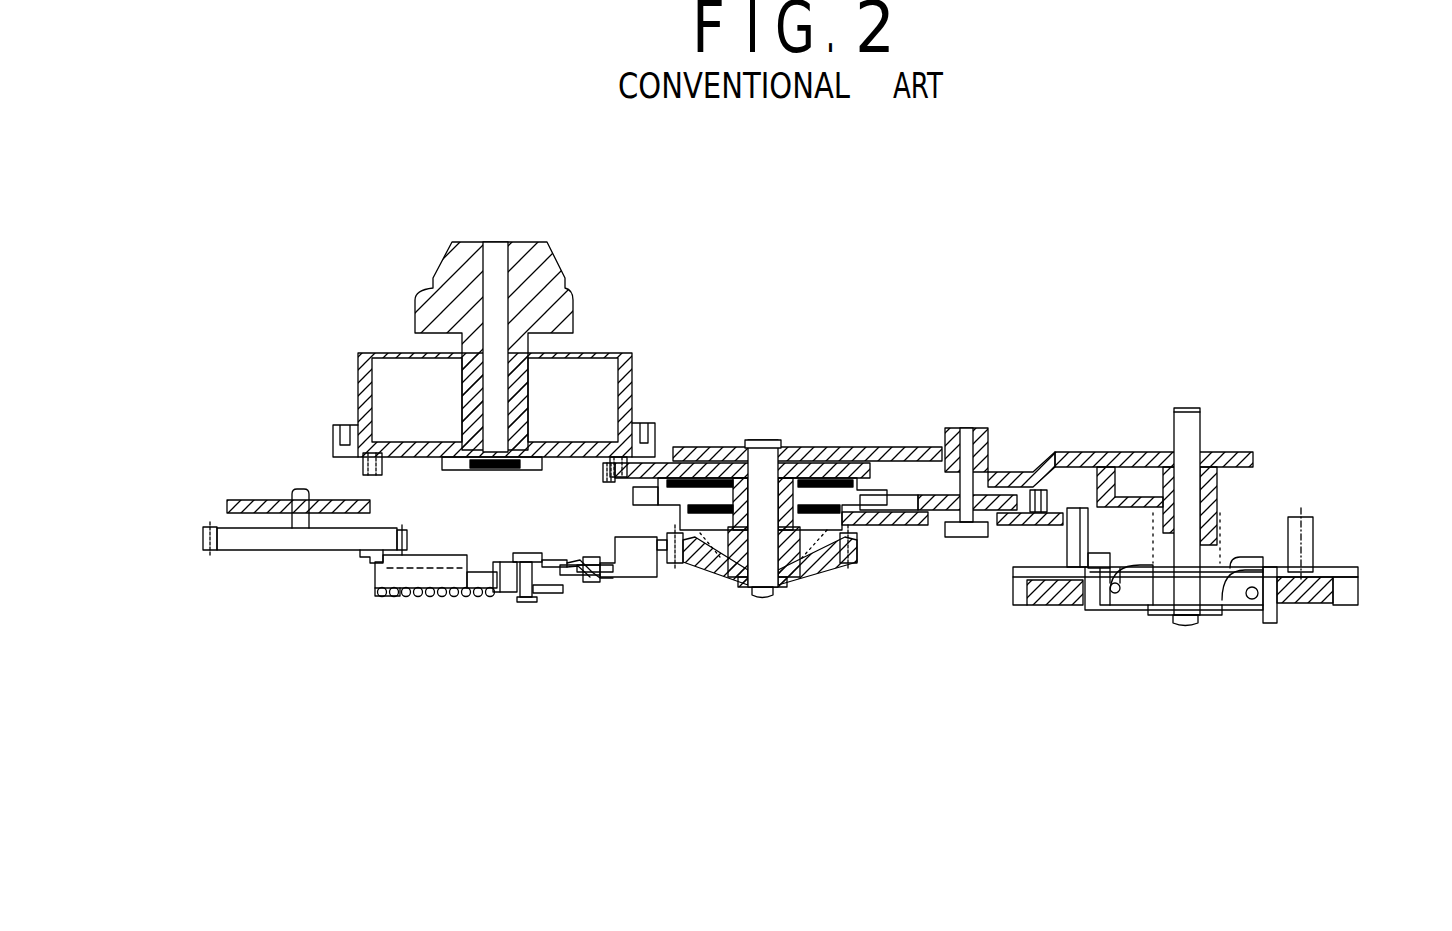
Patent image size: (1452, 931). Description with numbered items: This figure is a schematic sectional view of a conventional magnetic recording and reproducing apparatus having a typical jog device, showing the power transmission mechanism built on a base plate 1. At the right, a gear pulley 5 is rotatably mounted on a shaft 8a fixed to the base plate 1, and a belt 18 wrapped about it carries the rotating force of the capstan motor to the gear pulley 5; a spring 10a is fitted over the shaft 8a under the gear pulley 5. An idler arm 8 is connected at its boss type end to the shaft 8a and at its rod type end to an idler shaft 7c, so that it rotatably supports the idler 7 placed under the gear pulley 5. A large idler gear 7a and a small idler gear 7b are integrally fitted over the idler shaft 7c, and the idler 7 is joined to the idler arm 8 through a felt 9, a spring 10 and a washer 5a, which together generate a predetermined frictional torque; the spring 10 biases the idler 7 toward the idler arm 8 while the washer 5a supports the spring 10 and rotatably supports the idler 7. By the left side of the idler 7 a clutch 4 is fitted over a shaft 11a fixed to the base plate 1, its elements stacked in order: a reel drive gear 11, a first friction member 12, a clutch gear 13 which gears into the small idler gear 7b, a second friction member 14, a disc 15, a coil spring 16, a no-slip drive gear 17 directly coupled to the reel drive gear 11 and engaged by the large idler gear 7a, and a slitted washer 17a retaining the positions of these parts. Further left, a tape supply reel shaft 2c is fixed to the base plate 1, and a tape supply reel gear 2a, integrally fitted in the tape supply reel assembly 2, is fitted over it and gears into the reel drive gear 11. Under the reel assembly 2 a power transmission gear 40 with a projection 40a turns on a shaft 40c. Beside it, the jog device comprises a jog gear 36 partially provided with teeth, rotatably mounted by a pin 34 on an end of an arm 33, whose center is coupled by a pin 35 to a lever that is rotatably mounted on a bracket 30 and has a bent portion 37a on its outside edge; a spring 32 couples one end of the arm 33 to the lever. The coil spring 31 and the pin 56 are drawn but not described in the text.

The base plate 1 is at (1240, 455).
The tape supply reel assembly 2 is at (564, 268).
The tape supply reel gear 2a is at (363, 468).
The tape supply reel shaft 2c is at (496, 258).
The clutch 4 is at (767, 609).
The gear pulley 5 is at (1105, 623).
The washer 5a is at (1010, 527).
The idler 7 is at (925, 525).
The large idler gear 7a is at (893, 525).
The small idler gear 7b is at (1050, 460).
The idler shaft 7c is at (967, 428).
The idler arm 8 is at (1090, 455).
The shaft 8a is at (1195, 420).
The felt 9 is at (1002, 462).
The spring 10 is at (960, 530).
The spring 10a is at (1222, 548).
The reel drive gear 11 is at (710, 447).
The shaft 11a is at (768, 440).
The first friction member 12 is at (730, 447).
The clutch gear 13 is at (817, 447).
The second friction member 14 is at (843, 447).
The disc 15 is at (697, 542).
The coil spring 16 is at (715, 574).
The no-slip drive gear 17 is at (835, 575).
The slitted washer 17a is at (784, 589).
The belt 18 is at (1360, 590).
The bracket 30 is at (548, 598).
The coil spring 31 is at (465, 597).
The spring 32 is at (430, 595).
The arm 33 is at (575, 590).
The pin 34 is at (582, 585).
The pin 35 is at (522, 600).
The jog gear 36 is at (640, 578).
The bent portion 37a is at (397, 592).
The power transmission gear 40 is at (220, 552).
The projection 40a is at (360, 556).
The shaft 40c is at (297, 492).
The pin 56 is at (1313, 530).